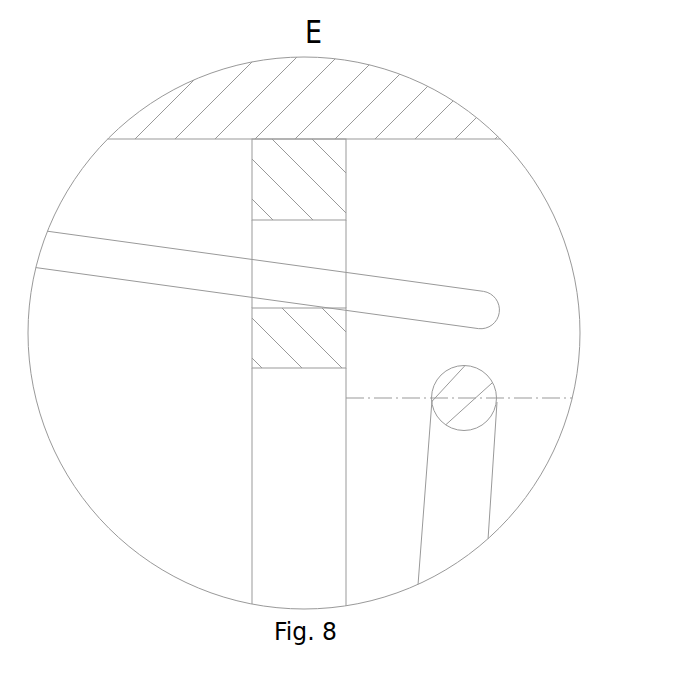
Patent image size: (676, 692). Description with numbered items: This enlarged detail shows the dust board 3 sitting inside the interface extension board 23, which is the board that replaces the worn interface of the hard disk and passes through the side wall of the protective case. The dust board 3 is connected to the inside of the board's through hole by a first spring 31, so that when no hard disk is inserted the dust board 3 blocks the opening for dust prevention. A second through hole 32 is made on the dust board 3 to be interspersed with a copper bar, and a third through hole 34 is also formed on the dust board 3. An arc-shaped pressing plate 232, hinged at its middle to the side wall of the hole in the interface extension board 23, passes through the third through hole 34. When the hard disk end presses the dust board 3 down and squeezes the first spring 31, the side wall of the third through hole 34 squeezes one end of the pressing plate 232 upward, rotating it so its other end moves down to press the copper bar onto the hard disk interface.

The interface extension board 23 is at (173, 113).
The arc-shaped pressing plate 232 is at (165, 270).
The dust board 3 is at (337, 188).
The third through hole 34 is at (338, 253).
The second through hole 32 is at (257, 415).
The first spring 31 is at (492, 392).